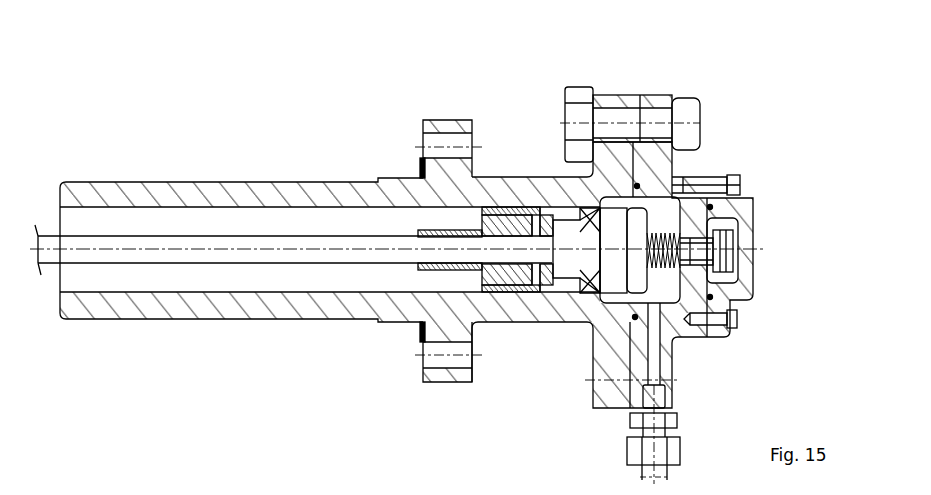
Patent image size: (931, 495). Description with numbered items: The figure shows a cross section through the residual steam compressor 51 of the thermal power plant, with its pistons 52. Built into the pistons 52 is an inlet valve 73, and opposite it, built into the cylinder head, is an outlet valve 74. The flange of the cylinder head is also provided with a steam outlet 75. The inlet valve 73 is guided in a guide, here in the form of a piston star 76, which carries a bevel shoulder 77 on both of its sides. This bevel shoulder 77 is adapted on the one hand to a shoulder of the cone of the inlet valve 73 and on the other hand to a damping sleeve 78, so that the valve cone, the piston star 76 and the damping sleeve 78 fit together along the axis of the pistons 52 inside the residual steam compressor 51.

The residual steam compressor 51 is at (613, 317).
The pistons 52 is at (550, 277).
The inlet valve 73 is at (563, 245).
The outlet valve 74 is at (632, 217).
The steam outlet 75 is at (647, 362).
The piston star 76 is at (482, 205).
The bevel shoulder 77 is at (510, 206).
The damping sleeve 78 is at (437, 228).